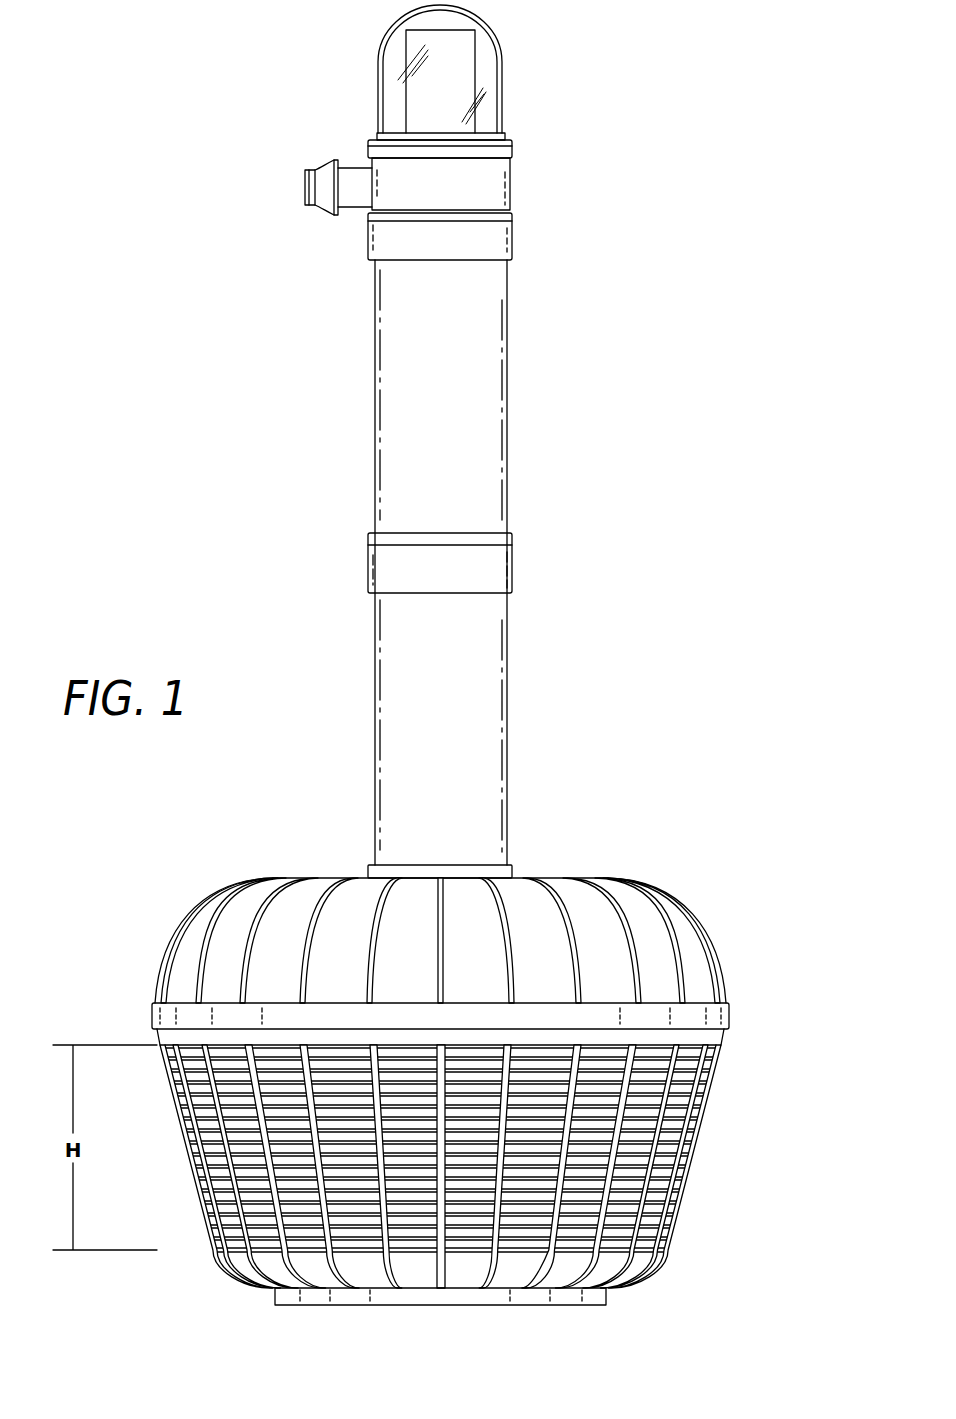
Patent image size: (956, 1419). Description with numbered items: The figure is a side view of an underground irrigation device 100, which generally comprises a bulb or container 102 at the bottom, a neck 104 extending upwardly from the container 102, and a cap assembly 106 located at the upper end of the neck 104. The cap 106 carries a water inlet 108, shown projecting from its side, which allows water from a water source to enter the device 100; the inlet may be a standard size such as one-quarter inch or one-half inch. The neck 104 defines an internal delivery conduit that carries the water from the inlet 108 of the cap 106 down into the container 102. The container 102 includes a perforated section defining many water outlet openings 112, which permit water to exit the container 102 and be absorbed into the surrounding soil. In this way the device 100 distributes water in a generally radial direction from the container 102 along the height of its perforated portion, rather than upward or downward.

The irrigation device 100 is at (626, 576).
The container 102 is at (743, 965).
The neck 104 is at (555, 721).
The cap assembly 106 is at (568, 165).
The water inlet 108 is at (336, 136).
The water outlet openings 112 is at (678, 1094).